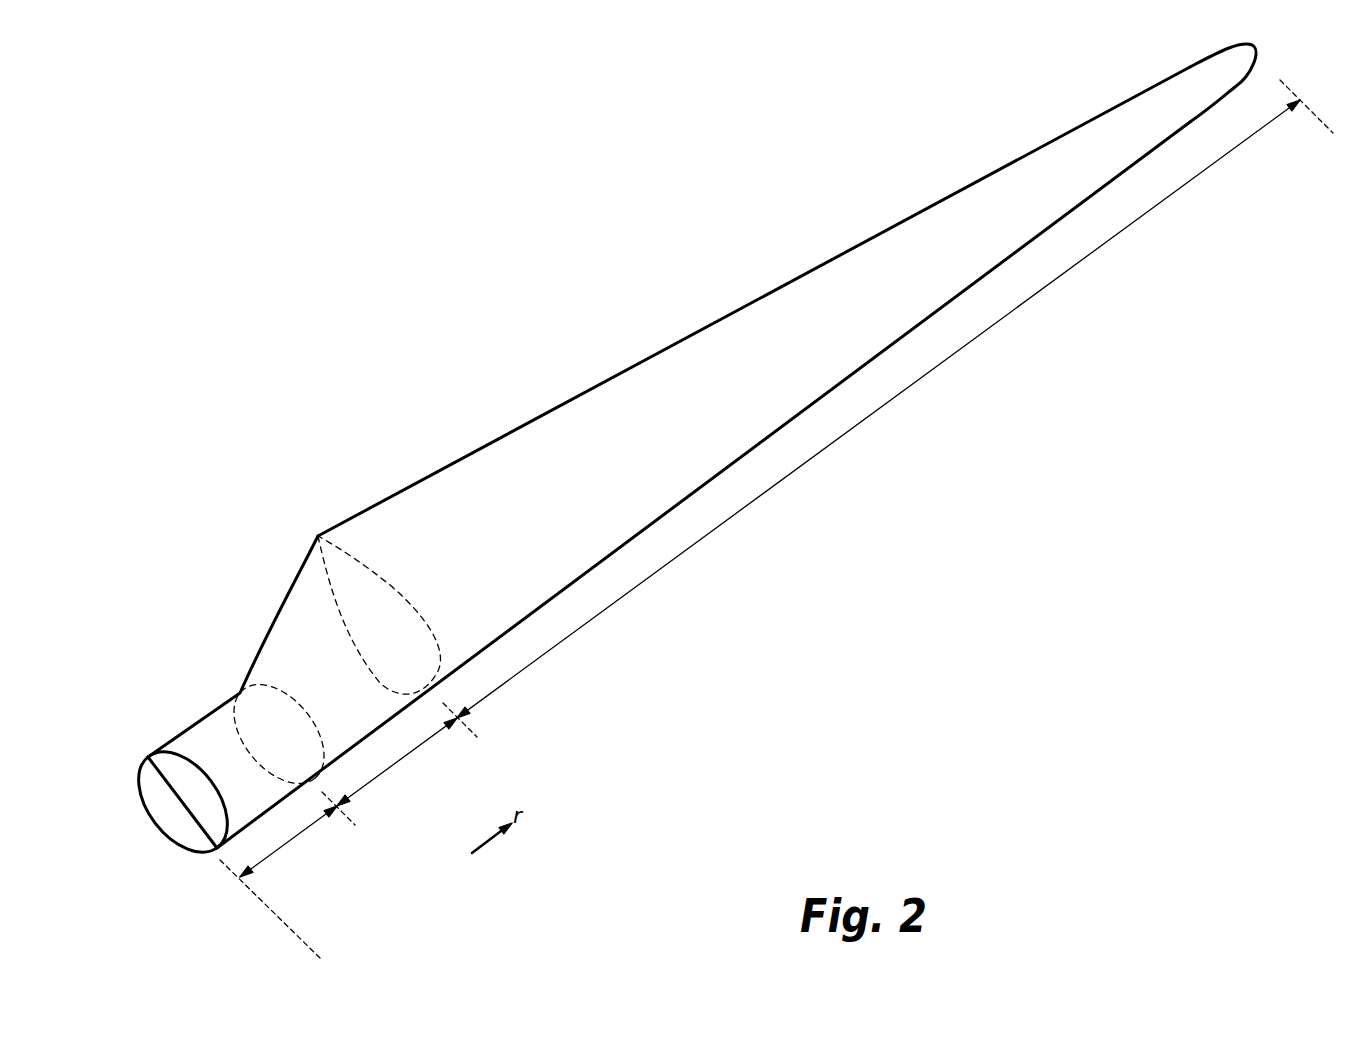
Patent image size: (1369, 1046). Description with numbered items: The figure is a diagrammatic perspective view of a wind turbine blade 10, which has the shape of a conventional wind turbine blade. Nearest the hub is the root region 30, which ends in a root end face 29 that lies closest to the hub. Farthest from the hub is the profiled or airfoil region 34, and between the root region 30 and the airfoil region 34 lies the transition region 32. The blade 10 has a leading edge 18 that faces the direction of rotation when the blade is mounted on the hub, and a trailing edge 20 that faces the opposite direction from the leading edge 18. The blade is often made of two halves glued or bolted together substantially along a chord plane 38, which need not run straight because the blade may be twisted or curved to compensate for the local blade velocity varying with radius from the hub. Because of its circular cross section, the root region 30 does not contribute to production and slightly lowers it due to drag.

The wind turbine blade 10 is at (686, 466).
The leading edge 18 is at (918, 327).
The trailing edge 20 is at (925, 208).
The root end face 29 is at (143, 775).
The root region 30 is at (293, 840).
The transition region 32 is at (403, 757).
The airfoil region 34 is at (790, 470).
The chord plane 38 is at (170, 803).